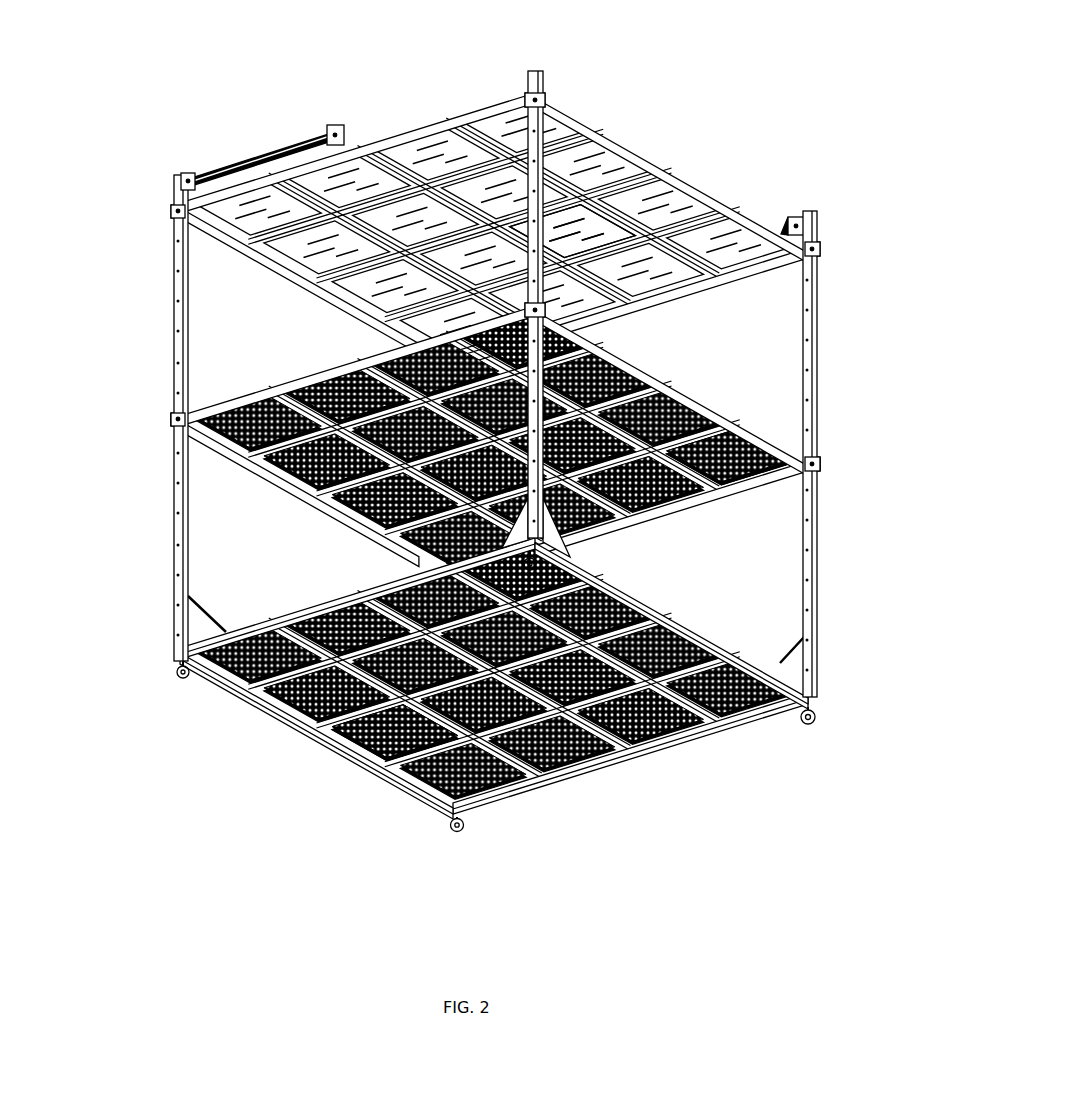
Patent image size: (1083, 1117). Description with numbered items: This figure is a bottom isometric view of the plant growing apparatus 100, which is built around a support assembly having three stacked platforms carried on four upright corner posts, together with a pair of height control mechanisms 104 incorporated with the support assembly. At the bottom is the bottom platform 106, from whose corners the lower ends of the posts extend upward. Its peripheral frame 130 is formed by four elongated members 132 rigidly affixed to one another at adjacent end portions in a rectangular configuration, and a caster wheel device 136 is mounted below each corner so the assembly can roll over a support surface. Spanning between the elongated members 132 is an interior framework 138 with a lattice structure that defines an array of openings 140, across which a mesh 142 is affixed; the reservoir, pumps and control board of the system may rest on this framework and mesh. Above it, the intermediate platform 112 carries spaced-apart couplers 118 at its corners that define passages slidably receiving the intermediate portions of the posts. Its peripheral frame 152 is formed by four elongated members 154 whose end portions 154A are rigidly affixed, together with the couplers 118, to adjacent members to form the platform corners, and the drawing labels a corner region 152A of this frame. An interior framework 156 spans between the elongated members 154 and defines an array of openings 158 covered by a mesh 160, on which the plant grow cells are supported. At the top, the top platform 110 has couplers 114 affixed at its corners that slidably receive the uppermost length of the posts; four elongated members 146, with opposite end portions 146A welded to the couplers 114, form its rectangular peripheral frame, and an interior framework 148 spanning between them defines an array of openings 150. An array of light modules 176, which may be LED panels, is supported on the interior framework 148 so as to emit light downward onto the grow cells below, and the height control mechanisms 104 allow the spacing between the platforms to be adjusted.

The plant growing apparatus 100 is at (494, 442).
The height control mechanism 104 is at (290, 129).
The bottom platform 106 is at (494, 684).
The top platform 110 is at (492, 203).
The intermediate platform 112 is at (494, 435).
The coupler 114 is at (165, 205).
The coupler 118 is at (162, 414).
The peripheral frame 130 is at (519, 684).
The elongated member 132 is at (332, 596).
The caster wheel device 136 is at (798, 720).
The interior framework 138 is at (598, 630).
The opening 140 is at (596, 800).
The mesh 142 is at (413, 778).
The elongated member 146 is at (438, 102).
The end portion 146A is at (529, 83).
The interior framework 148 is at (556, 183).
The opening 150 is at (586, 299).
The peripheral frame 152 is at (494, 436).
The middle shelf frame corner 152A is at (163, 405).
The elongated member 154 is at (305, 365).
The end portion 154A is at (542, 306).
The interior framework 156 is at (720, 412).
The opening 158 is at (562, 530).
The mesh 160 is at (390, 538).
The light module 176 is at (591, 236).